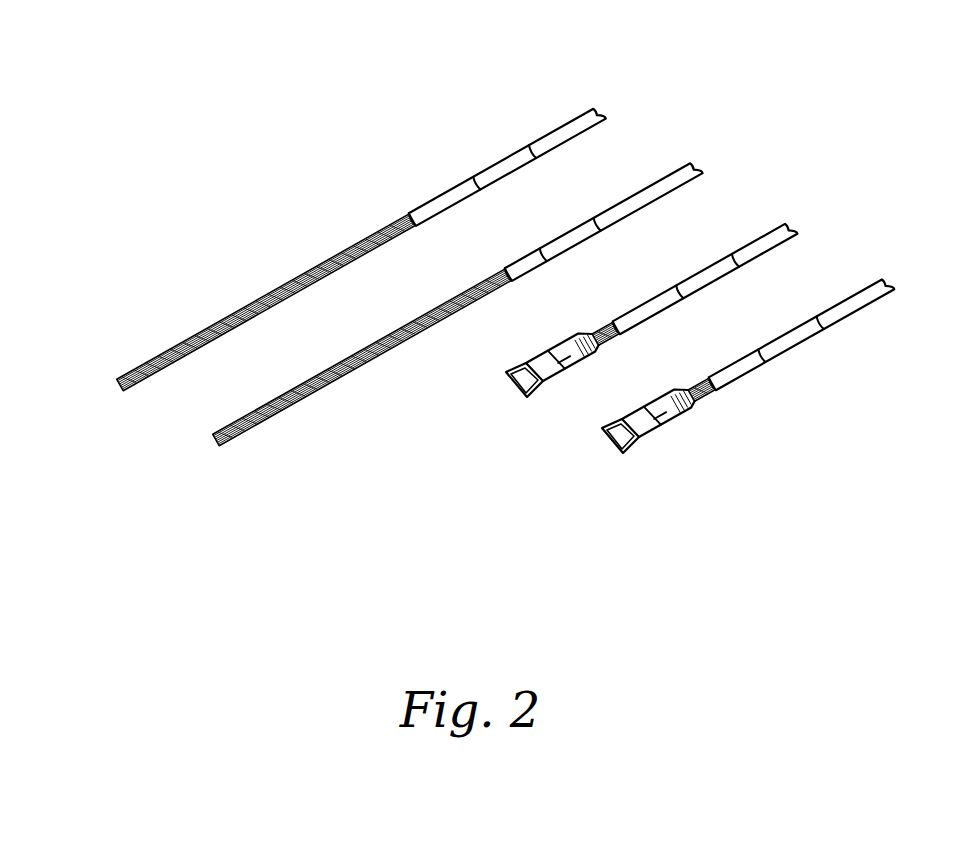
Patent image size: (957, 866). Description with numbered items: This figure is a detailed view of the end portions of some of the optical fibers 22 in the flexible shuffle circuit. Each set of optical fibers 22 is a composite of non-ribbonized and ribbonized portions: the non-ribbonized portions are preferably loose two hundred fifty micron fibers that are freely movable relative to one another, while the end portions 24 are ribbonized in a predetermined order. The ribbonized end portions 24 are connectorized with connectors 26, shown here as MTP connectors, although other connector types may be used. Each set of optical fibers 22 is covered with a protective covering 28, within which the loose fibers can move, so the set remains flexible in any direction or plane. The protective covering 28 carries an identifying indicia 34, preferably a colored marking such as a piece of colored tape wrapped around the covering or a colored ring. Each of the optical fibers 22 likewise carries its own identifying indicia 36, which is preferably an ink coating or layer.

The optical fibers 22 is at (105, 381).
The ribbonized end portions 24 is at (347, 227).
The connectors 26 is at (555, 384).
The protective covering 28 is at (565, 114).
The identifying indicia 34 is at (493, 156).
The identifying indicia 36 is at (263, 428).